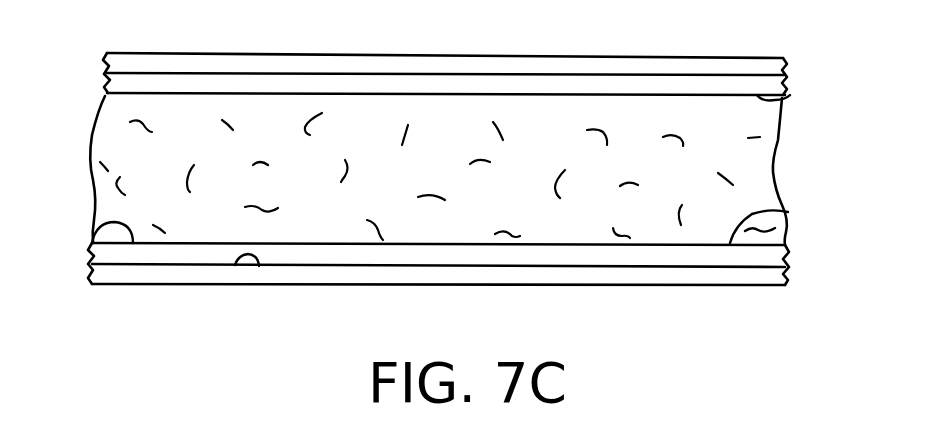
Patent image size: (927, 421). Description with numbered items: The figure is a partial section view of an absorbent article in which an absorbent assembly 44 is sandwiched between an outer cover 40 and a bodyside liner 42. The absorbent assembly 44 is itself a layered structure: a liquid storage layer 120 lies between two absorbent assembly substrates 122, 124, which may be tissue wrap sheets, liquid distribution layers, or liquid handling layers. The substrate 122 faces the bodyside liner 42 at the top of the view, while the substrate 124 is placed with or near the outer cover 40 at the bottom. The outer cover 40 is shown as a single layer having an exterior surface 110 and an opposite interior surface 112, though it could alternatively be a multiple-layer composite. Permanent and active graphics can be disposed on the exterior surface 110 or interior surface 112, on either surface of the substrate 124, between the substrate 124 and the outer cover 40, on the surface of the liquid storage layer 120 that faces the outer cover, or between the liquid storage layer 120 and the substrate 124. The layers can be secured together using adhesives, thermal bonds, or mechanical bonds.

The bodyside liner 42 is at (147, 52).
The absorbent assembly 44 is at (108, 160).
The outer cover 40 is at (95, 228).
The exterior surface 110 is at (150, 285).
The interior surface 112 is at (235, 265).
The liquid storage layer 120 is at (778, 165).
The absorbent assembly substrate 122 is at (785, 100).
The absorbent assembly substrate 124 is at (780, 212).